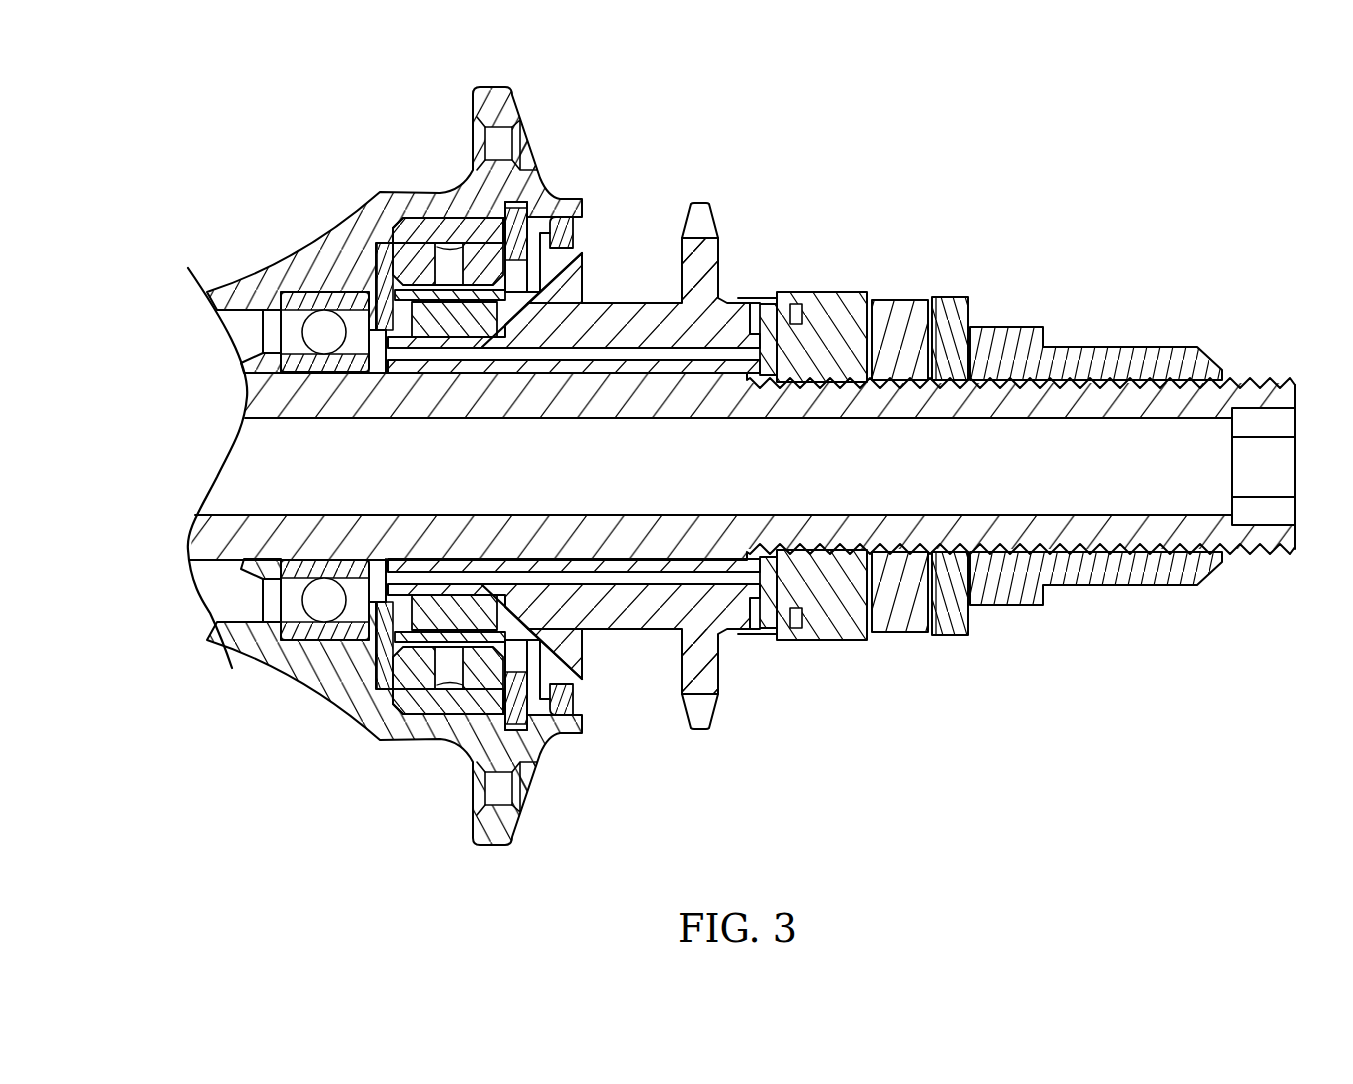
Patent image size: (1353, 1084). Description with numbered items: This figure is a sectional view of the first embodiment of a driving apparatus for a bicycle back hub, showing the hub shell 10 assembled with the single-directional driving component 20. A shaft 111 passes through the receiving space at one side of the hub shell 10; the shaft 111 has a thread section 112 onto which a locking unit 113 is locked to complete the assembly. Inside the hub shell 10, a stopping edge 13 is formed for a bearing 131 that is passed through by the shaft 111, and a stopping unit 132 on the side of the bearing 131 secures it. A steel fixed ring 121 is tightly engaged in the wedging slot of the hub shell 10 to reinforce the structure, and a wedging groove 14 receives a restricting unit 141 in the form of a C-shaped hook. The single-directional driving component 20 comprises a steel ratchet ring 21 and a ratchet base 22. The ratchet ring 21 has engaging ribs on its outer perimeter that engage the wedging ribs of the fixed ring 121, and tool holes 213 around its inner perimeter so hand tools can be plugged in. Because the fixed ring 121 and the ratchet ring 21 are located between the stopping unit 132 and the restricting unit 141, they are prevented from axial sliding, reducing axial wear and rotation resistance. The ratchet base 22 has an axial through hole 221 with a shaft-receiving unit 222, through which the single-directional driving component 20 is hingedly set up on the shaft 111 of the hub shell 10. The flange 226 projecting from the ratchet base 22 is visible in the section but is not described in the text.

The hub shell 10 is at (337, 233).
The shaft 111 is at (282, 413).
The stopping edge 13 is at (221, 470).
The bearing 131 is at (262, 628).
The stopping unit 132 is at (383, 656).
The ratchet ring 21 is at (397, 698).
The fixed ring 121 is at (405, 702).
The tool holes 213 is at (447, 677).
The wedging groove 14 is at (579, 504).
The restricting unit 141 is at (535, 728).
The ratchet base 22 is at (576, 298).
The flange 226 is at (712, 245).
The single-directional driving component 20 is at (587, 610).
The through hole 221 is at (745, 565).
The shaft-receiving unit 222 is at (800, 612).
The thread section 112 is at (1018, 607).
The locking unit 113 is at (900, 636).